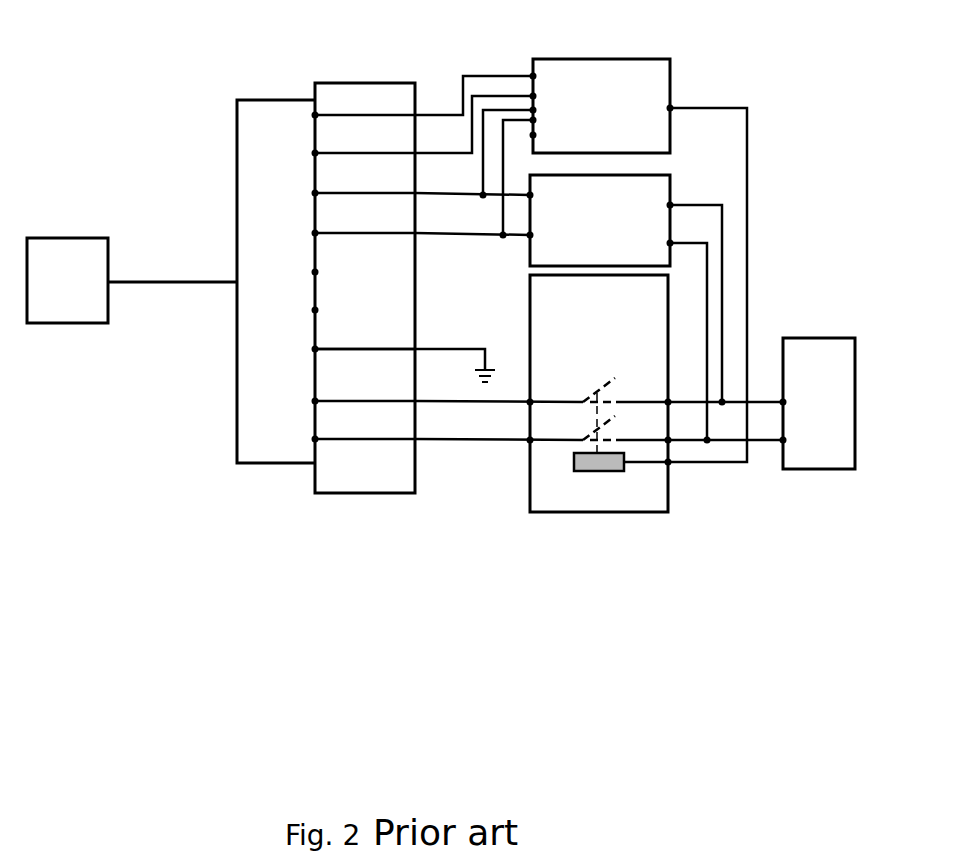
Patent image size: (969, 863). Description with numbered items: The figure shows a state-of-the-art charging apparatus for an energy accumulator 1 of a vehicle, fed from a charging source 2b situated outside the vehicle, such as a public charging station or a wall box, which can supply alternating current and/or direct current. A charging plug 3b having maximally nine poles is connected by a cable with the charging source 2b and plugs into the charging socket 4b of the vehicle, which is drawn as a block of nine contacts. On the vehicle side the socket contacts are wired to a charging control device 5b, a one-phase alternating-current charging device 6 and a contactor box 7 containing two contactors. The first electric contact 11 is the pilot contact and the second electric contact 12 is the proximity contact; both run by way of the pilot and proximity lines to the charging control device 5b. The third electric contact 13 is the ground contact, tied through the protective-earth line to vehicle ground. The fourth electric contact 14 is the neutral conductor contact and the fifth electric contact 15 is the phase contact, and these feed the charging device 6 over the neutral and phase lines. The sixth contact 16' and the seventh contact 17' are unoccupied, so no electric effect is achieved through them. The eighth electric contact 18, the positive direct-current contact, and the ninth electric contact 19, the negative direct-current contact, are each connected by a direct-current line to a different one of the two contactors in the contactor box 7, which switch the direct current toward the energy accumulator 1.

The energy accumulator 1 is at (819, 403).
The charging source 2b is at (67, 280).
The charging plug 3b is at (237, 100).
The charging socket 4b is at (365, 83).
The charging control device 5b is at (601, 106).
The charging device 6 is at (600, 220).
The contactor box 7 is at (599, 393).
The first electric contact 11 is at (252, 150).
The second electric contact 12 is at (252, 189).
The third electric contact 13 is at (339, 382).
The fourth electric contact 14 is at (251, 228).
The fifth electric contact 15 is at (236, 279).
The sixth contact 16' is at (248, 306).
The seventh contact 17' is at (248, 344).
The eighth electric contact 18 is at (236, 446).
The ninth electric contact 19 is at (237, 485).